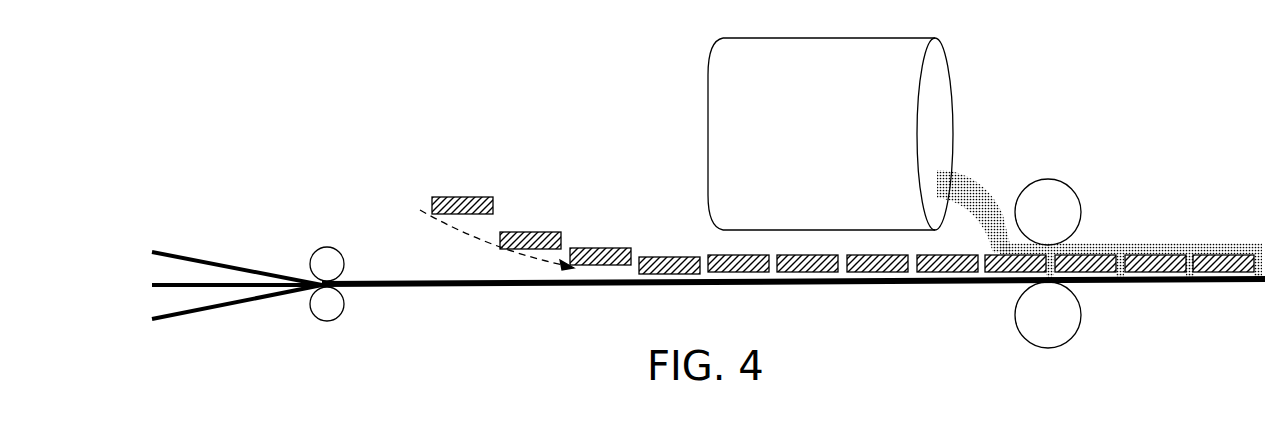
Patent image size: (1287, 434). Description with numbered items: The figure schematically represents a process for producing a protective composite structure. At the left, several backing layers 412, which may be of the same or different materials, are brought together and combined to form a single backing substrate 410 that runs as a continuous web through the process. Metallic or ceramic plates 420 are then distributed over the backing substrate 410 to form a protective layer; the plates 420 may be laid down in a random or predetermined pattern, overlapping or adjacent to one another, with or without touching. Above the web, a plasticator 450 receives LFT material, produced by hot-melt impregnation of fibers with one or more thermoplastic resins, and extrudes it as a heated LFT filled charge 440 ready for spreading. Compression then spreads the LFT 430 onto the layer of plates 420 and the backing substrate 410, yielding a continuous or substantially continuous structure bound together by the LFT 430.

The backing substrate 410 is at (397, 288).
The backing layers 412 is at (208, 308).
The metallic or ceramic plates 420 is at (670, 257).
The LFT 430 is at (1120, 247).
The heated LFT filled charge 440 is at (970, 190).
The plasticator 450 is at (831, 140).